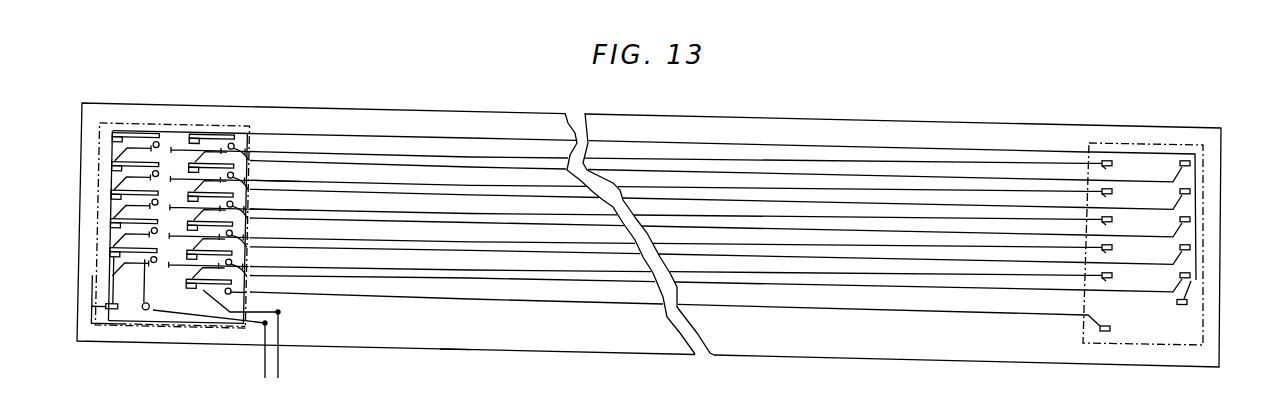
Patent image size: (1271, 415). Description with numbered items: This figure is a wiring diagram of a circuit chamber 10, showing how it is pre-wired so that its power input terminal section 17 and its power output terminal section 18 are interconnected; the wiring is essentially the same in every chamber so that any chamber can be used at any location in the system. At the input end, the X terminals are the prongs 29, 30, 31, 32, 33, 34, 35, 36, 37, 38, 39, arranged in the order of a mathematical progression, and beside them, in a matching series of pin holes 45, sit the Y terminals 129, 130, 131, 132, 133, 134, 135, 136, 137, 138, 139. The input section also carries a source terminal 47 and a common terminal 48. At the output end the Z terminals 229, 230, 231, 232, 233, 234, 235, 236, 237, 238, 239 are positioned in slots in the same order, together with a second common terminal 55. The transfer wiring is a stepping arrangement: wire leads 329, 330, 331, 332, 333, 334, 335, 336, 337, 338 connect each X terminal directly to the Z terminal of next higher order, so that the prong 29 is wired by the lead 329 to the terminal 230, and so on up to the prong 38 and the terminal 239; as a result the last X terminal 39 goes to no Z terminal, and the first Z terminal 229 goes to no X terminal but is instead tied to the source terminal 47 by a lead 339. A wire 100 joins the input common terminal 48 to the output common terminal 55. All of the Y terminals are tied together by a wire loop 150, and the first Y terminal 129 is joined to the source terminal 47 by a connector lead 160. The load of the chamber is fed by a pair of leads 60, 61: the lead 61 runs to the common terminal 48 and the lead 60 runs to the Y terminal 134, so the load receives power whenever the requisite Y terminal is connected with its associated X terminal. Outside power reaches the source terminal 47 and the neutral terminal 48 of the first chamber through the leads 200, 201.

The circuit chamber 10 is at (784, 112).
The power input terminal section 17 is at (111, 120).
The power output terminal section 18 is at (1138, 141).
The wire 100 is at (461, 319).
The prong 29 is at (115, 252).
The prong 30 is at (113, 224).
The prong 31 is at (113, 195).
The prong 32 is at (113, 166).
The prong 33 is at (113, 137).
The terminal element 129 is at (145, 318).
The terminal element 130 is at (127, 236).
The terminal element 131 is at (127, 207).
The terminal element 132 is at (127, 178).
The terminal element 133 is at (127, 150).
The prong 34 is at (222, 297).
The prong 35 is at (205, 298).
The prong 36 is at (176, 322).
The prong 37 is at (175, 280).
The prong 38 is at (185, 300).
The prong 39 is at (193, 128).
The pin hole 45 is at (168, 145).
The source terminal 47 is at (112, 305).
The common terminal 48 is at (151, 309).
The common terminal 55 is at (1111, 329).
The lead 60 is at (278, 378).
The lead 61 is at (265, 378).
The terminal element 134 is at (281, 312).
The terminal element 135 is at (270, 292).
The terminal element 136 is at (275, 238).
The terminal element 137 is at (270, 212).
The terminal element 138 is at (250, 182).
The terminal element 139 is at (230, 128).
The wire loop 150 is at (168, 146).
The connector lead 160 is at (137, 323).
The lead 200 is at (30, 282).
The lead 201 is at (96, 326).
The terminal element 229 is at (1113, 275).
The terminal element 230 is at (1113, 247).
The terminal element 231 is at (1113, 219).
The terminal element 232 is at (1113, 191).
The terminal element 233 is at (1113, 163).
The terminal element 234 is at (1187, 302).
The terminal element 235 is at (1190, 275).
The terminal element 236 is at (1190, 247).
The terminal element 237 is at (1190, 219).
The terminal element 238 is at (1190, 191).
The terminal element 239 is at (1190, 163).
The wire lead 329 is at (508, 242).
The wire lead 330 is at (542, 214).
The wire lead 331 is at (550, 186).
The wire lead 332 is at (372, 155).
The wire lead 333 is at (442, 136).
The wire lead 334 is at (763, 286).
The wire lead 335 is at (795, 259).
The wire lead 336 is at (830, 231).
The wire lead 337 is at (870, 204).
The wire lead 338 is at (920, 176).
The lead 339 is at (116, 276).